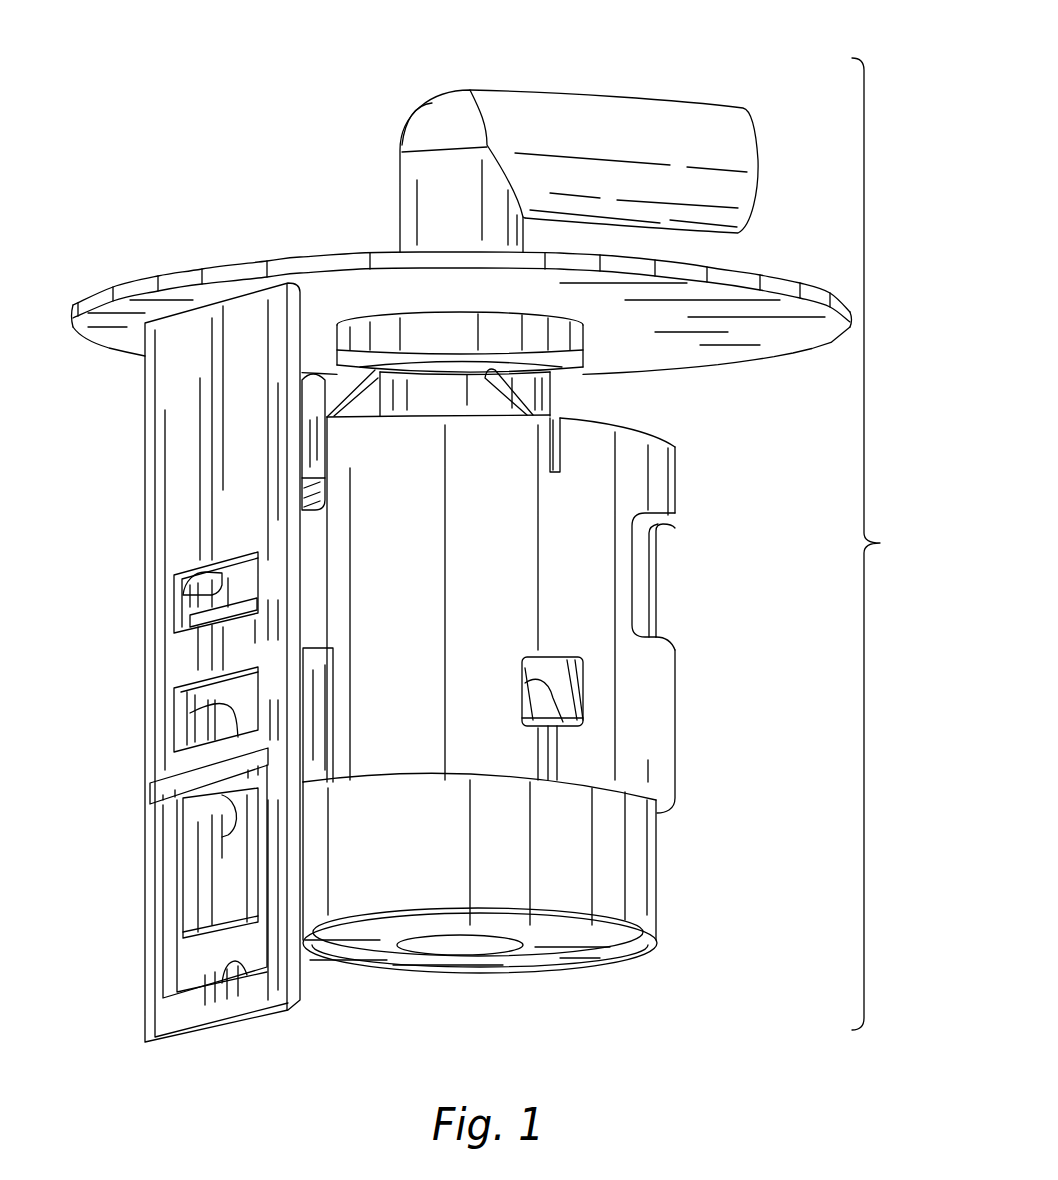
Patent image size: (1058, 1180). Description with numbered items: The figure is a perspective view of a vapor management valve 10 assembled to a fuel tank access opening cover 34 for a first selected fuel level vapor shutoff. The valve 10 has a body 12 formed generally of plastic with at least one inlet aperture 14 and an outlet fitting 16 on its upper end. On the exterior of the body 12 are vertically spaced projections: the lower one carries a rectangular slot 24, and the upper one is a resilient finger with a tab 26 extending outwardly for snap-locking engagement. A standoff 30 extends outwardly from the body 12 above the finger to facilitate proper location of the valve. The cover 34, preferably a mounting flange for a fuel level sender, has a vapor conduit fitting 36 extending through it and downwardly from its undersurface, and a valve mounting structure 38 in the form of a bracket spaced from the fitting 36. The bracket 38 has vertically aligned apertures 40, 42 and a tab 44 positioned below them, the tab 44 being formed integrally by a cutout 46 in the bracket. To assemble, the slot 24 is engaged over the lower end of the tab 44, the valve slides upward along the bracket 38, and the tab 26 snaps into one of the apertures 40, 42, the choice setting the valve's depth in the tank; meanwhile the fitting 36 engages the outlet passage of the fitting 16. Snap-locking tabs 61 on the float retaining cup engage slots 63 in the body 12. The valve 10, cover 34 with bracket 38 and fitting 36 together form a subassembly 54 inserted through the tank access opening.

The vapor management valve 10 is at (718, 826).
The body 12 is at (677, 494).
The inlet aperture 14 is at (643, 594).
The outlet fitting 16 is at (543, 395).
The rectangular slot 24 is at (233, 828).
The tab 26 is at (207, 618).
The standoff 30 is at (320, 397).
The cover 34 is at (222, 258).
The fitting 36 is at (612, 98).
The valve mounting structure 38 is at (170, 447).
The aperture 40 is at (192, 590).
The aperture 42 is at (213, 703).
The tab 44 is at (212, 938).
The cutout 46 is at (247, 975).
The subassembly 54 is at (882, 544).
The snap-locking tab 61 is at (585, 690).
The slot 63 is at (563, 727).